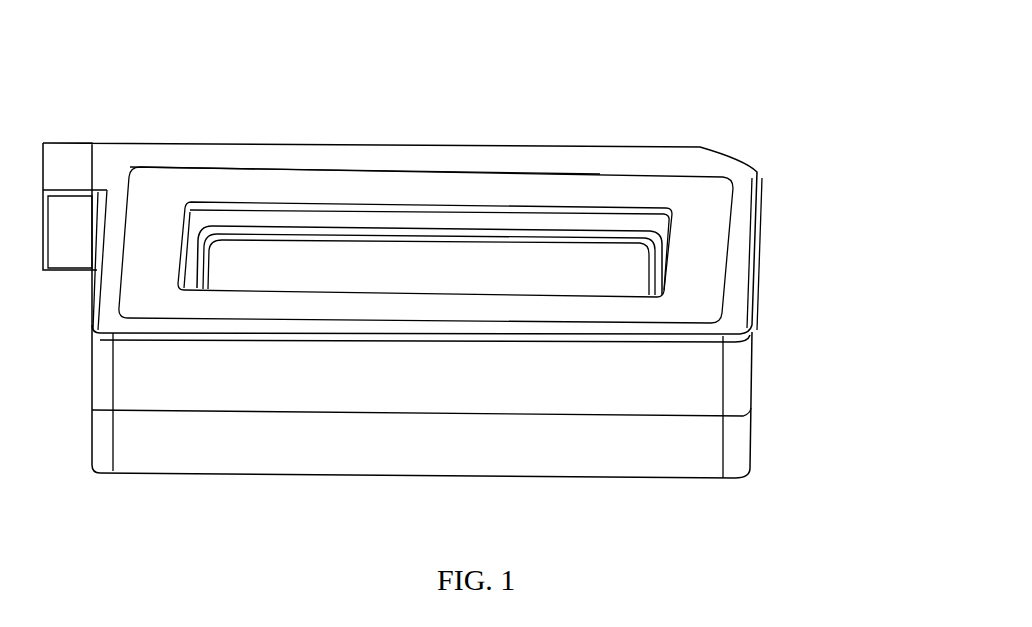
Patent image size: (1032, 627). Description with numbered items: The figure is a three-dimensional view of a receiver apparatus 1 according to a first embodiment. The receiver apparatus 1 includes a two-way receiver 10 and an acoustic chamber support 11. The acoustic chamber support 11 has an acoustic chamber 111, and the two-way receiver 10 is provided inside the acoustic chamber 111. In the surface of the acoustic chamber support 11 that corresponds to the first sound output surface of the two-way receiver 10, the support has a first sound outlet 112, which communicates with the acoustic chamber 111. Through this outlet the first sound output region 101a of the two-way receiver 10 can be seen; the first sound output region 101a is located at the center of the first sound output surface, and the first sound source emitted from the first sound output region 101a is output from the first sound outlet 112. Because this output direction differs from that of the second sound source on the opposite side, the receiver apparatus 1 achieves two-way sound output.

The receiver apparatus 1 is at (745, 131).
The two-way receiver 10 is at (531, 213).
The acoustic chamber support 11 is at (766, 259).
The acoustic chamber 111 is at (214, 222).
The first sound outlet 112 is at (333, 205).
The first sound output region 101a is at (411, 262).